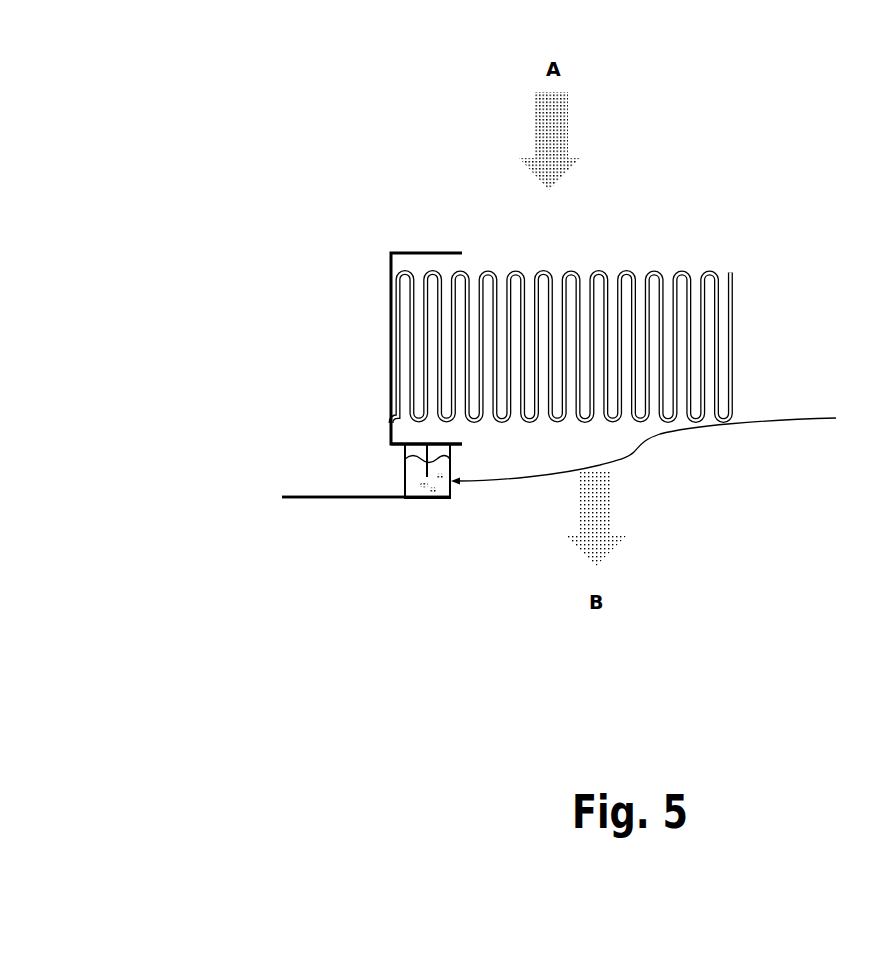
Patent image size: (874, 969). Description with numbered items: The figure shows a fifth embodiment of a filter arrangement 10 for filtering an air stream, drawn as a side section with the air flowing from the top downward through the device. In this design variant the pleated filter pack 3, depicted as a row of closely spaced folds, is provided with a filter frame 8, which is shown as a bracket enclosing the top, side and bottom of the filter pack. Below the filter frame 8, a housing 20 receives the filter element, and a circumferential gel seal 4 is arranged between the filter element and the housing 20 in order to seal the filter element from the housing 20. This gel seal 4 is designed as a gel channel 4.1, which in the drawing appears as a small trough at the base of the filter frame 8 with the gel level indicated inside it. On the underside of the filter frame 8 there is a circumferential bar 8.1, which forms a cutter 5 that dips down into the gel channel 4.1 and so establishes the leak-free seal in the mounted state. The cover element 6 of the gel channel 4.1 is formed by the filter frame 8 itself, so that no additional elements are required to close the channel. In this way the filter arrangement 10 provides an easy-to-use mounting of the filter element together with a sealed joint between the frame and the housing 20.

The pleated filter pack 3 is at (566, 262).
The filter frame 8 is at (382, 263).
The cover element 6 is at (382, 443).
The cutter 5 is at (397, 471).
The circumferential bar 8.1 is at (290, 433).
The gel seal 4 is at (249, 472).
The housing 20 is at (330, 497).
The gel channel 4.1 is at (661, 438).
The filter arrangement 10 is at (716, 150).